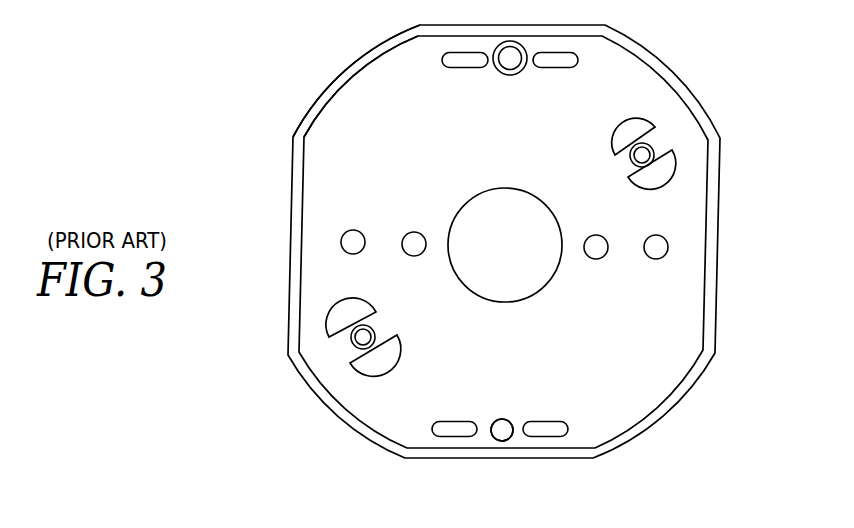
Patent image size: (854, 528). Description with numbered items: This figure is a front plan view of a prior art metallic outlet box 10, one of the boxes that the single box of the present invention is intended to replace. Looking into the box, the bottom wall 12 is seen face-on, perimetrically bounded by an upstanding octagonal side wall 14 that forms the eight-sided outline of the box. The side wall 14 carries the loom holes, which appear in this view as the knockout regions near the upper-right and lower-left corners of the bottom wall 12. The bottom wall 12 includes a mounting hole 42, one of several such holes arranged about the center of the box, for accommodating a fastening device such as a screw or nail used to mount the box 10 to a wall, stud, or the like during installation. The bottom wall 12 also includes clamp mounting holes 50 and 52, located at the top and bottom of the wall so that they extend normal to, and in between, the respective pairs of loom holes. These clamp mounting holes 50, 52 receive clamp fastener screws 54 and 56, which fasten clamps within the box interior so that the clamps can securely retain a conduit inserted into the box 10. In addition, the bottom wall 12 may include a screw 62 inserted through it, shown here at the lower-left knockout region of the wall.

The prior art outlet box 10 is at (215, 77).
The bottom wall 12 is at (593, 418).
The upstanding octagonal side wall 14 is at (322, 106).
The mounting hole 42 is at (342, 243).
The clamp mounting hole 50 is at (500, 437).
The clamp mounting hole 52 is at (500, 73).
The clamp fastener screw 54 is at (497, 437).
The clamp fastener screw 56 is at (508, 56).
The screw 62 is at (357, 340).